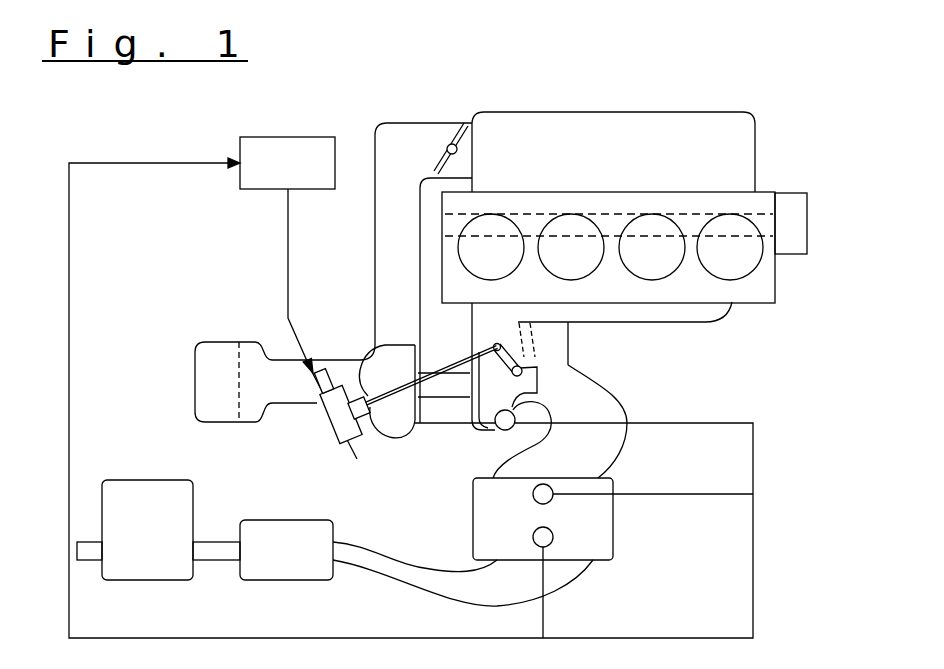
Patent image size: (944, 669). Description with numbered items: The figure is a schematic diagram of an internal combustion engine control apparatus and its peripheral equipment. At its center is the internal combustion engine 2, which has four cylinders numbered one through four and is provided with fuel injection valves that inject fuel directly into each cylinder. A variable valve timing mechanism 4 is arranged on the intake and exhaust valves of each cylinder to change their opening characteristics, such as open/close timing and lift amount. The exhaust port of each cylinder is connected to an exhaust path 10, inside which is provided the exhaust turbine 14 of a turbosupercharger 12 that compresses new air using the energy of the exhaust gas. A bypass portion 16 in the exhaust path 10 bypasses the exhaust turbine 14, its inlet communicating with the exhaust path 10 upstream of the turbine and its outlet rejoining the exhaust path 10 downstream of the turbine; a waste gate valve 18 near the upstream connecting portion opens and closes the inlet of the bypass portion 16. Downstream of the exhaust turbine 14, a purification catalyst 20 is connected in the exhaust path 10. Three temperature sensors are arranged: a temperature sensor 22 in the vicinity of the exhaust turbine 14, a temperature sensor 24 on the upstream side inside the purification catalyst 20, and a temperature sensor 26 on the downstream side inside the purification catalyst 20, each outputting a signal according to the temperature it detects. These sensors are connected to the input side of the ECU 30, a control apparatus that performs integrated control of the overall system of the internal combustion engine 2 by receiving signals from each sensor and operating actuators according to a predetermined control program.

The internal combustion engine 2 is at (783, 277).
The variable valve timing mechanism 4 is at (807, 215).
The exhaust path 10 is at (712, 325).
The turbosupercharger 12 is at (438, 415).
The exhaust turbine 14 is at (462, 433).
The bypass portion 16 is at (553, 333).
The waste gate valve 18 is at (527, 362).
The purification catalyst 20 is at (615, 528).
The temperature sensor 22 is at (540, 434).
The temperature sensor 24 is at (550, 501).
The temperature sensor 26 is at (550, 542).
The ECU 30 is at (283, 139).